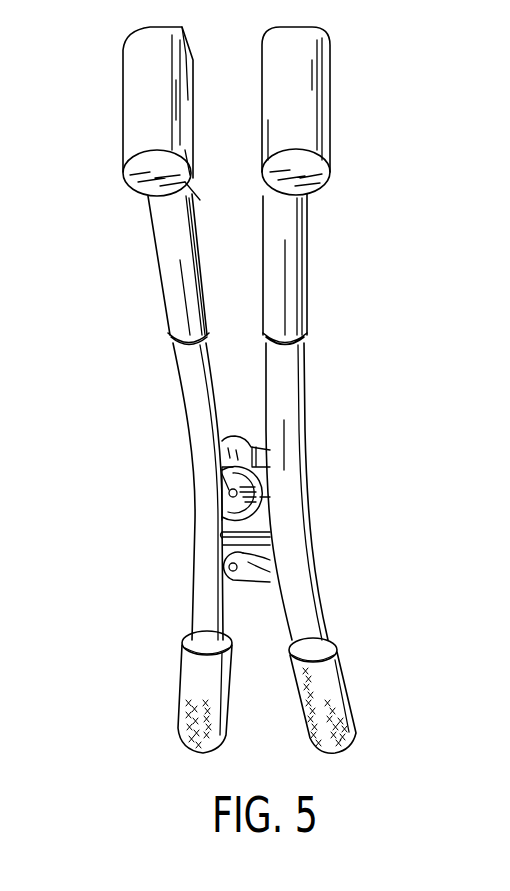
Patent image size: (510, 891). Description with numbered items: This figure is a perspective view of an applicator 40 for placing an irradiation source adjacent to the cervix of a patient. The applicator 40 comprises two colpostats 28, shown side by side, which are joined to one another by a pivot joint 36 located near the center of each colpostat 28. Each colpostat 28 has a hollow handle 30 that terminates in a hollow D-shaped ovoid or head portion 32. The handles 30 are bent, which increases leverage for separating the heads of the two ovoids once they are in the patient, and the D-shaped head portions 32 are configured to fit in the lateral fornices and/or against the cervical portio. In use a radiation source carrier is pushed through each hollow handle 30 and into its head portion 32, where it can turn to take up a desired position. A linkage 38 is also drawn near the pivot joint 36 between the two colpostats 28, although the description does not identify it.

The colpostat 28 is at (273, 265).
The colpostat handle 30 is at (304, 677).
The D-shaped head portion 32 is at (133, 113).
The pivot joint 36 is at (252, 446).
The link 38 is at (272, 537).
The applicator 40 is at (413, 198).